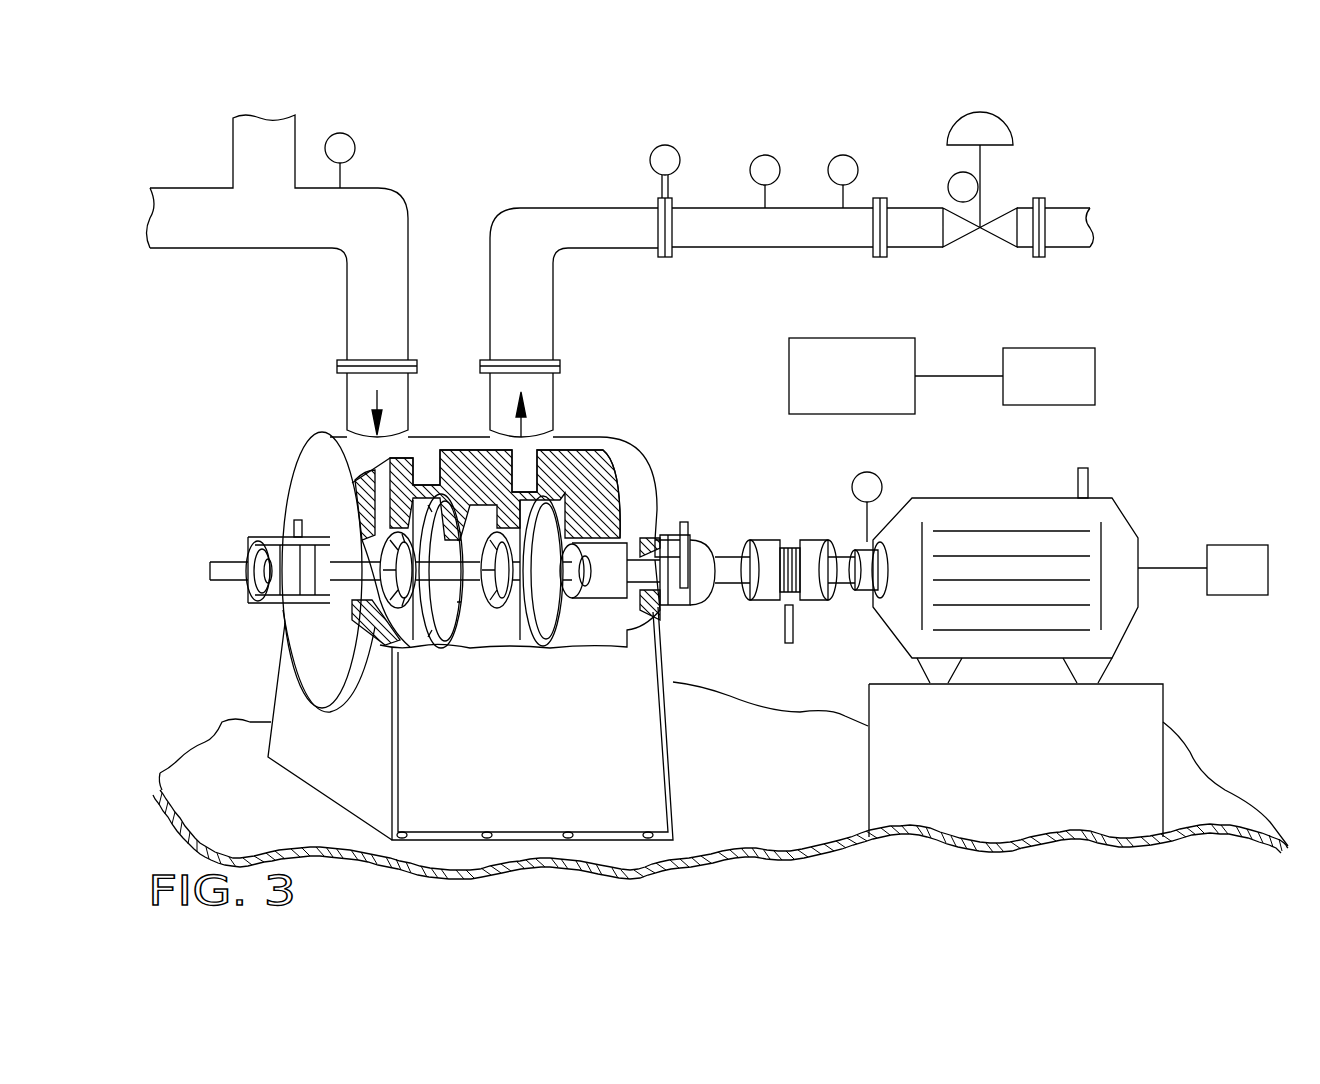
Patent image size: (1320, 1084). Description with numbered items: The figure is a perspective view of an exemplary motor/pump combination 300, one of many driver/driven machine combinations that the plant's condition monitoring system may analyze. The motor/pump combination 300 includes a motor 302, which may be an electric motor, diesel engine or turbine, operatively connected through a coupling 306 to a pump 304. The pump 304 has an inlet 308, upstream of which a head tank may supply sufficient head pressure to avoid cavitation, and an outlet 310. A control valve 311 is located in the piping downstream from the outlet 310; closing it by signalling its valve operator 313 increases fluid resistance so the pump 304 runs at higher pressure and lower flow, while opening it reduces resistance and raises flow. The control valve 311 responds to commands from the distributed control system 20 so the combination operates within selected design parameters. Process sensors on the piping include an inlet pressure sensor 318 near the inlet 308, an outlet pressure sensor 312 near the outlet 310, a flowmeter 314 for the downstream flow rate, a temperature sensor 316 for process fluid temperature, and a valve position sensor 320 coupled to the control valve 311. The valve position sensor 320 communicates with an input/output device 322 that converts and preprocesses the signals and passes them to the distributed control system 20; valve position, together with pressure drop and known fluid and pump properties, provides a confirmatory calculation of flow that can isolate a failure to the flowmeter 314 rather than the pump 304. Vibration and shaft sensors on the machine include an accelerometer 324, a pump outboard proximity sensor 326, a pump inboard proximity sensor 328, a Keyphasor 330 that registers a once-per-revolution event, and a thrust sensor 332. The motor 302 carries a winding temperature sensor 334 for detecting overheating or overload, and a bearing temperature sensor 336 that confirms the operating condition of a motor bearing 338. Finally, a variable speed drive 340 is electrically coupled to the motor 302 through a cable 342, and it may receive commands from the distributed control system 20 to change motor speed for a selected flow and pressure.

The motor/pump combination 300 is at (1163, 298).
The motor 302 is at (1037, 529).
The pump 304 is at (618, 462).
The coupling 306 is at (765, 540).
The inlet 308 is at (345, 405).
The outlet 310 is at (540, 406).
The control valve 311 is at (920, 250).
The outlet pressure sensor 312 is at (755, 158).
The valve operator 313 is at (1003, 129).
The flowmeter 314 is at (650, 158).
The temperature sensor 316 is at (832, 158).
The inlet pressure sensor 318 is at (355, 150).
The valve position sensor 320 is at (950, 180).
The input/output (I/O) device 322 is at (872, 389).
The distributed control system (DCS) 20 is at (1063, 389).
The accelerometer 324 is at (1090, 478).
The pump outboard proximity sensor 326 is at (292, 522).
The pump inboard proximity sensor 328 is at (688, 522).
The Keyphasor 330 is at (783, 637).
The thrust sensor 332 is at (213, 562).
The winding temperature sensor 334 is at (948, 498).
The bearing temperature sensor 336 is at (878, 475).
The motor bearing 338 is at (870, 600).
The variable speed drive (VSD) 340 is at (1260, 587).
The cable 342 is at (1167, 572).